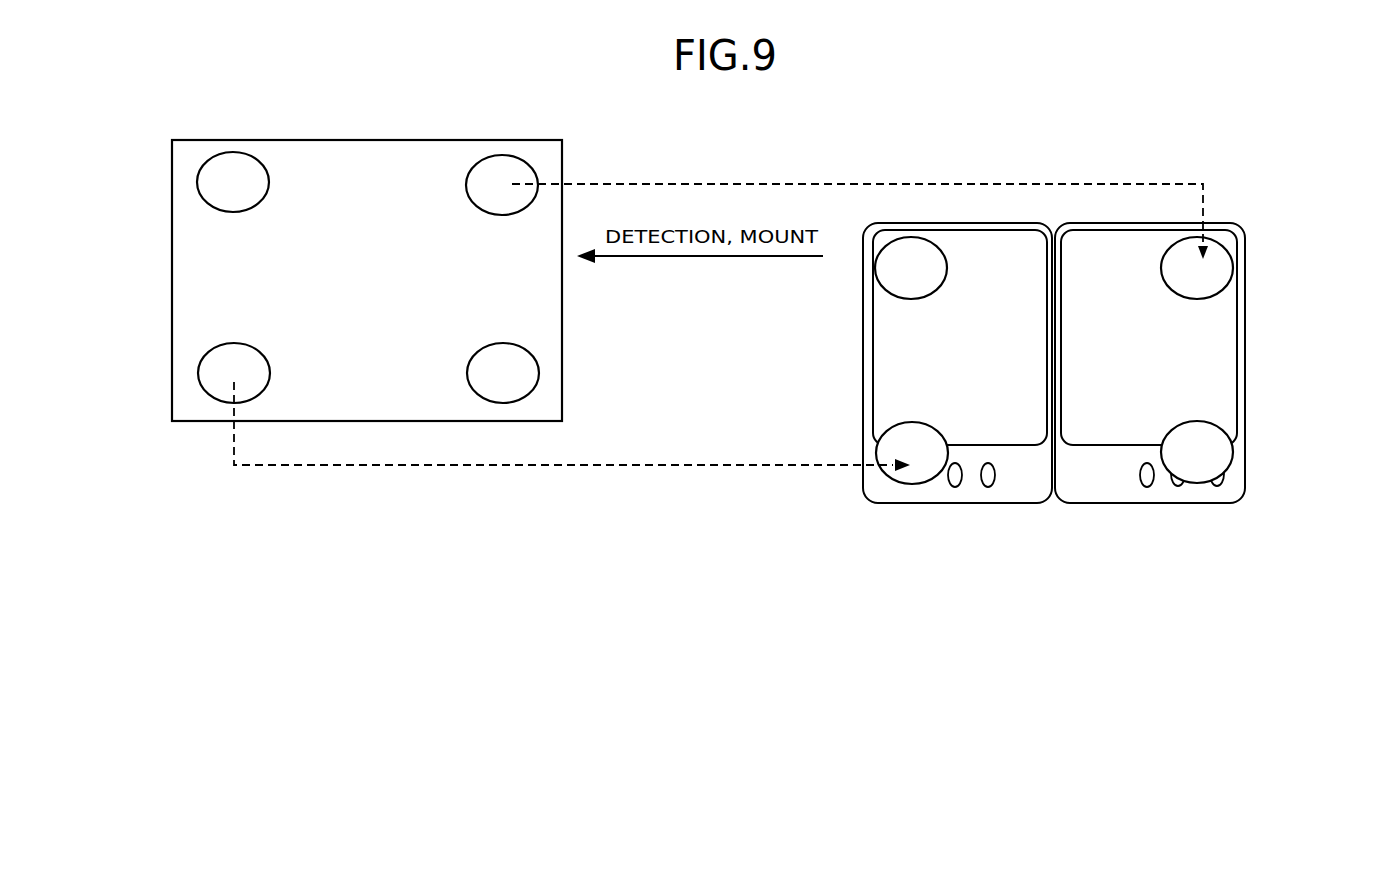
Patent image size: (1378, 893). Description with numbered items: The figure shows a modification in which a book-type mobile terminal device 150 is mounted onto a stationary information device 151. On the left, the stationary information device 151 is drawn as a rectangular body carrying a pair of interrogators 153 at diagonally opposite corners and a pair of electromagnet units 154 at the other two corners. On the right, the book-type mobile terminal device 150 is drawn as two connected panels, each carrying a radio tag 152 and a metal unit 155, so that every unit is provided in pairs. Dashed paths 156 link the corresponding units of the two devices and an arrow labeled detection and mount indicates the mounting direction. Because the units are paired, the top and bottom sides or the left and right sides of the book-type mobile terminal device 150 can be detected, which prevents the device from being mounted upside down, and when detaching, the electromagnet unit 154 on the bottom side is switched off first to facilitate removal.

The book-type mobile terminal device 150 is at (1295, 324).
The stationary information device 151 is at (186, 264).
The radio tag 152 is at (897, 253).
The interrogator 153 is at (236, 165).
The electromagnet unit 154 is at (501, 168).
The metal unit 155 is at (1218, 270).
The alignment path 156 is at (800, 181).